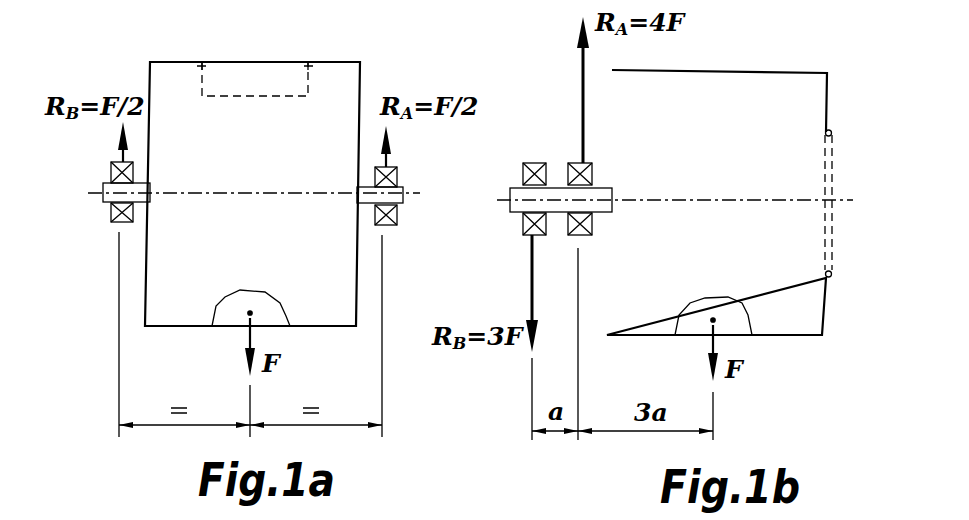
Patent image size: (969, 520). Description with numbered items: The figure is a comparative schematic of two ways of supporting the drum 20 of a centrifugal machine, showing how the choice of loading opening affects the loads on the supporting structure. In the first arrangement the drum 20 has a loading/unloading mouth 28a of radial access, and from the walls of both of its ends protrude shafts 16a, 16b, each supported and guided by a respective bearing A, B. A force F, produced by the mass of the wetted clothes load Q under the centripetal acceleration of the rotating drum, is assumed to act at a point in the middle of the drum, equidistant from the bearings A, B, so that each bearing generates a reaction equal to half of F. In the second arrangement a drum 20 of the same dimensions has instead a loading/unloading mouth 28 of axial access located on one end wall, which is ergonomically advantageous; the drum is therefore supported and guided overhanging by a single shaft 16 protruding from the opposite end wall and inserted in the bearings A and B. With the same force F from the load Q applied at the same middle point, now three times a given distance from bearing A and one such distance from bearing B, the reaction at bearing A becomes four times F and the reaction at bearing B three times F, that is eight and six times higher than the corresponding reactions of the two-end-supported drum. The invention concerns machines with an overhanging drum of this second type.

In FIG. 1a, the drum 20 is at (335, 78).
In FIG. 1b, the drum 20 is at (783, 88).
In FIG. 1a, the loading/unloading mouth of radial access 28a is at (240, 70).
In FIG. 1a, the shaft 16a is at (400, 192).
In FIG. 1a, the shaft 16b is at (103, 193).
In FIG. 1b, the shaft 16 is at (512, 204).
In FIG. 1b, the loading/unloading mouth of axial access 28 is at (834, 178).
In FIG. 1a, the bearing A is at (397, 215).
In FIG. 1b, the bearing A is at (578, 165).
In FIG. 1a, the bearing B is at (111, 172).
In FIG. 1b, the bearing B is at (523, 170).
In FIG. 1a, the wetted clothes load Q is at (270, 303).
In FIG. 1b, the wetted clothes load Q is at (735, 310).